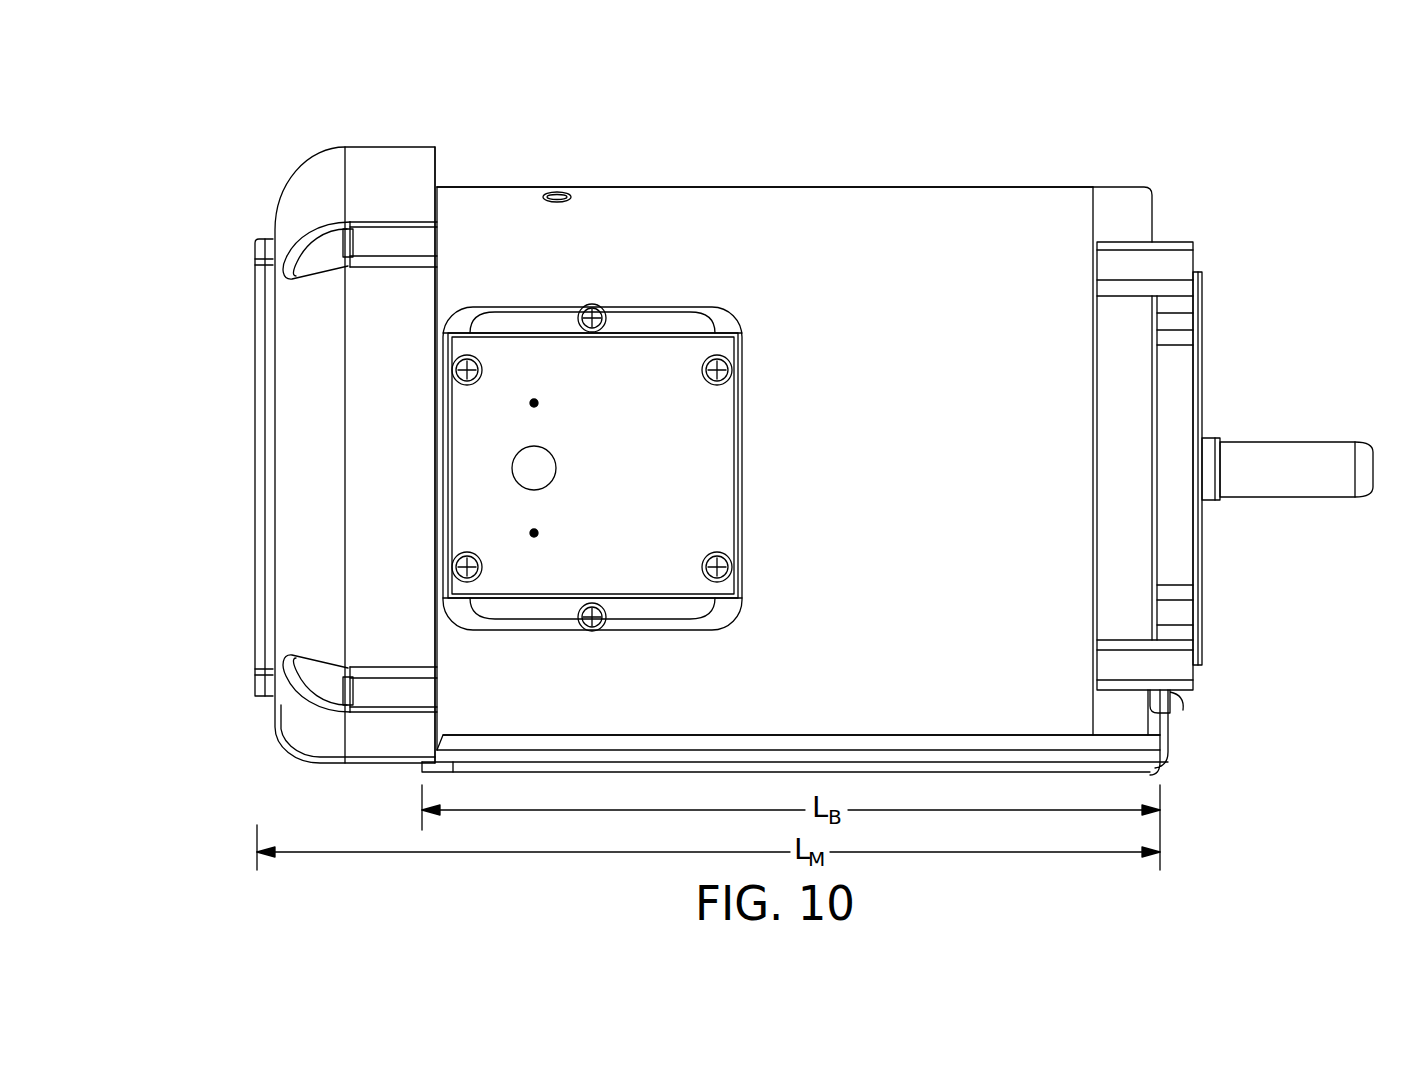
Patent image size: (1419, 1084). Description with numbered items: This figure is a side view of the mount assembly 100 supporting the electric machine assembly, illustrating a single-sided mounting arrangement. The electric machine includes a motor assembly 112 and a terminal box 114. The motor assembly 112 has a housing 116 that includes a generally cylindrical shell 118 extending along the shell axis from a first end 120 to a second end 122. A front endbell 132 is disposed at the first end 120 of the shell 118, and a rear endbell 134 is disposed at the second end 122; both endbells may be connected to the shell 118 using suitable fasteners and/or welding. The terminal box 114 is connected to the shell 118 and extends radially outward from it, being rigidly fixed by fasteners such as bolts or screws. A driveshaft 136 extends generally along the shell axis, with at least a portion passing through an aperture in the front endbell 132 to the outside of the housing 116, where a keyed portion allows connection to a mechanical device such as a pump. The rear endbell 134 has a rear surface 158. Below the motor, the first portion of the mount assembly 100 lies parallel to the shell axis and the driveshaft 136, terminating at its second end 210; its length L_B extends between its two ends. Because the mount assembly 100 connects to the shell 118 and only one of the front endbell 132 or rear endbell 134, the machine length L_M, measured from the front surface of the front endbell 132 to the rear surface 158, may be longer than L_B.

The mount assembly 100 is at (1200, 740).
The motor assembly 112 is at (945, 160).
The terminal box 114 is at (654, 350).
The housing 116 is at (743, 160).
The shell 118 is at (600, 207).
The first end 120 is at (1093, 186).
The second end 122 is at (437, 186).
The front endbell 132 is at (1125, 215).
The rear endbell 134 is at (296, 193).
The driveshaft 136 is at (1286, 456).
The rear surface 158 is at (256, 330).
The second end 210 is at (422, 763).